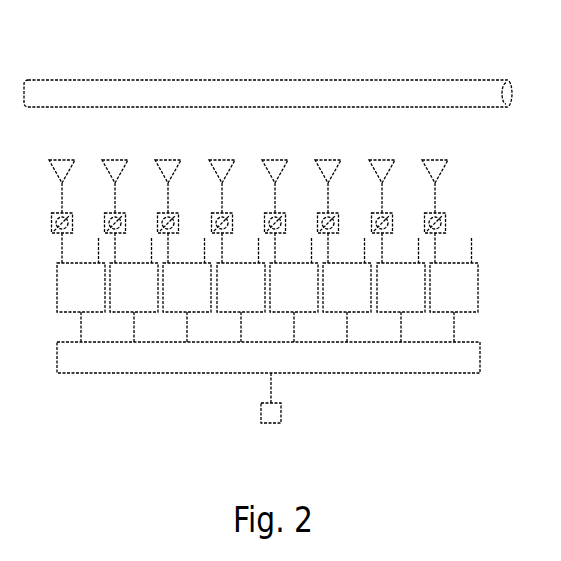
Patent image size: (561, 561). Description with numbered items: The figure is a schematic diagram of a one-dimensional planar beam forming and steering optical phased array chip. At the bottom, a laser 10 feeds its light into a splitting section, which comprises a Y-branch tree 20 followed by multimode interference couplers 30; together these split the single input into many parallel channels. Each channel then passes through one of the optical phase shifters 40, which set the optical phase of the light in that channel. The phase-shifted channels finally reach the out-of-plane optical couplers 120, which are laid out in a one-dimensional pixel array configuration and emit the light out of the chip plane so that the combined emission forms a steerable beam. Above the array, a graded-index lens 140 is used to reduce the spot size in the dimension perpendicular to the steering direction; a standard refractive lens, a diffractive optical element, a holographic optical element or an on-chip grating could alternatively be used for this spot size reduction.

The graded-index (GRIN) lens 140 is at (416, 71).
The out-of-plane optical couplers 120 is at (454, 165).
The optical phase shifters 40 is at (454, 215).
The multimode interference couplers 30 is at (489, 279).
The Y-branch tree 20 is at (489, 354).
The laser 10 is at (272, 430).